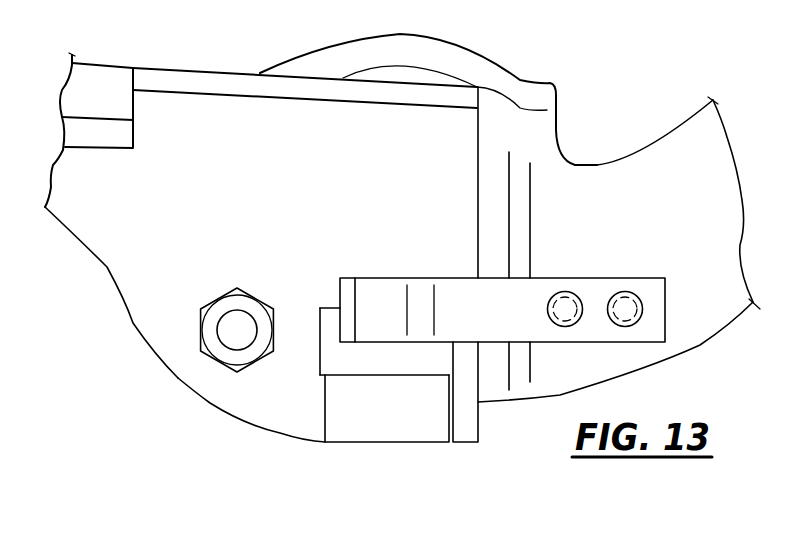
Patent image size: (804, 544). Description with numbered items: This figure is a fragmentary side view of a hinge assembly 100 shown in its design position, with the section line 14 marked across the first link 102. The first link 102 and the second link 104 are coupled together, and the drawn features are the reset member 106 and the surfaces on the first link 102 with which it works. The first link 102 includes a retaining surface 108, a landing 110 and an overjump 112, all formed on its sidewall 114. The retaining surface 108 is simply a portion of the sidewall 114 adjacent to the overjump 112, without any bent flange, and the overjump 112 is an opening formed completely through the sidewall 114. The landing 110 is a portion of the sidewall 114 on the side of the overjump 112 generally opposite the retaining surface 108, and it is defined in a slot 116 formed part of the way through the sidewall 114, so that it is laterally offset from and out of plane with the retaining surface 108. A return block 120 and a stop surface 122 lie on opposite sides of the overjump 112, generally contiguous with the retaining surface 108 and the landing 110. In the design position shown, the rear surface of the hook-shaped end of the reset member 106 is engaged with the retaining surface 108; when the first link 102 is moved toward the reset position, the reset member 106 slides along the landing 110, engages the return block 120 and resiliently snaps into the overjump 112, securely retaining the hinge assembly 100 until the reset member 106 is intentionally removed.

The hinge assembly 100 is at (576, 98).
The first link 102 is at (124, 331).
The second link 104 is at (606, 149).
The reset member 106 is at (585, 268).
The retaining surface 108 is at (330, 293).
The landing 110 is at (417, 418).
The overjump 112 is at (337, 363).
The sidewall 114 is at (182, 370).
The slot 116 is at (455, 405).
The return block 120 is at (332, 310).
The stop surface 122 is at (380, 370).
The section line 14- 14 is at (390, 253).